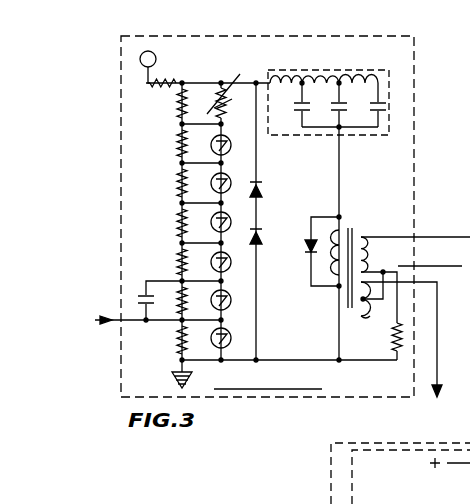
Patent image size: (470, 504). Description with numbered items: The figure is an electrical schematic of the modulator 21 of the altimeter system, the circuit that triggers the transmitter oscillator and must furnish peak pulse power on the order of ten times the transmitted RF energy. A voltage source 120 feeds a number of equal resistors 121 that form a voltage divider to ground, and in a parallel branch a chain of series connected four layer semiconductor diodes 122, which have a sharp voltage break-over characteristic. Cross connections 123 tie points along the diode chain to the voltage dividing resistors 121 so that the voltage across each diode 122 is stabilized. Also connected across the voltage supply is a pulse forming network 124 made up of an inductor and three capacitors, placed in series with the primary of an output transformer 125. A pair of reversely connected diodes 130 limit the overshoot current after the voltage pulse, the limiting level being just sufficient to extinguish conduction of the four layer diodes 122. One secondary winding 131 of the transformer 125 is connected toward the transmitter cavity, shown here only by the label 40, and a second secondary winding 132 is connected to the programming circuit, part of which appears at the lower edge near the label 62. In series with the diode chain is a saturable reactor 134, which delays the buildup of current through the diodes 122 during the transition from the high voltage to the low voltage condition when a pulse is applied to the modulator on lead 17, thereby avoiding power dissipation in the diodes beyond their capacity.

The lead 17 is at (127, 322).
The modulator 21 is at (416, 84).
The transmitter cavity 40 is at (458, 120).
The programming circuit 62 is at (312, 503).
The voltage source 120 is at (156, 62).
The equal resistors 121 is at (177, 242).
The four layer semiconductor diodes 122 is at (232, 250).
The cross connections 123 is at (199, 80).
The pulse forming network 124 is at (346, 72).
The output transformer 125 is at (348, 230).
The reversely connected diodes 130 is at (259, 190).
The secondary winding 131 is at (366, 240).
The second secondary winding 132 is at (368, 314).
The saturable reactor 134 is at (232, 88).